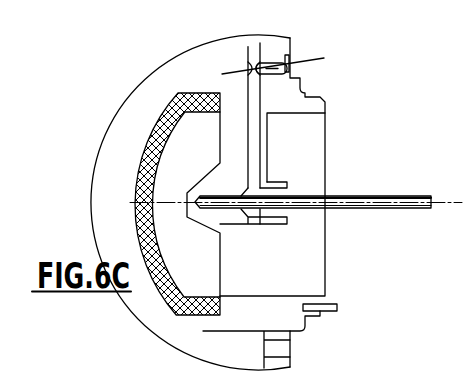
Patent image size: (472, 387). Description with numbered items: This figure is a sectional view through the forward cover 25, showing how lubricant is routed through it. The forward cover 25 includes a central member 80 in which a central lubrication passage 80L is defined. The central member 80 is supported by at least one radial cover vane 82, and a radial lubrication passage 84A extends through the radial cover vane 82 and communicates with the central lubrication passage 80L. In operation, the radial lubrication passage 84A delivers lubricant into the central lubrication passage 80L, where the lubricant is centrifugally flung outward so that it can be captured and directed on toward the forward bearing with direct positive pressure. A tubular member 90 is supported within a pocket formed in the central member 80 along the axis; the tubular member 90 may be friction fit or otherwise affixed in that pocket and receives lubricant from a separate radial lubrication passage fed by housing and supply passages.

The forward cover 25 is at (170, 57).
The central member 80 is at (218, 181).
The central lubrication passage 80L is at (280, 190).
The radial cover vane 82 is at (268, 148).
The radial lubrication passage 84A is at (272, 101).
The tubular member 90 is at (395, 196).